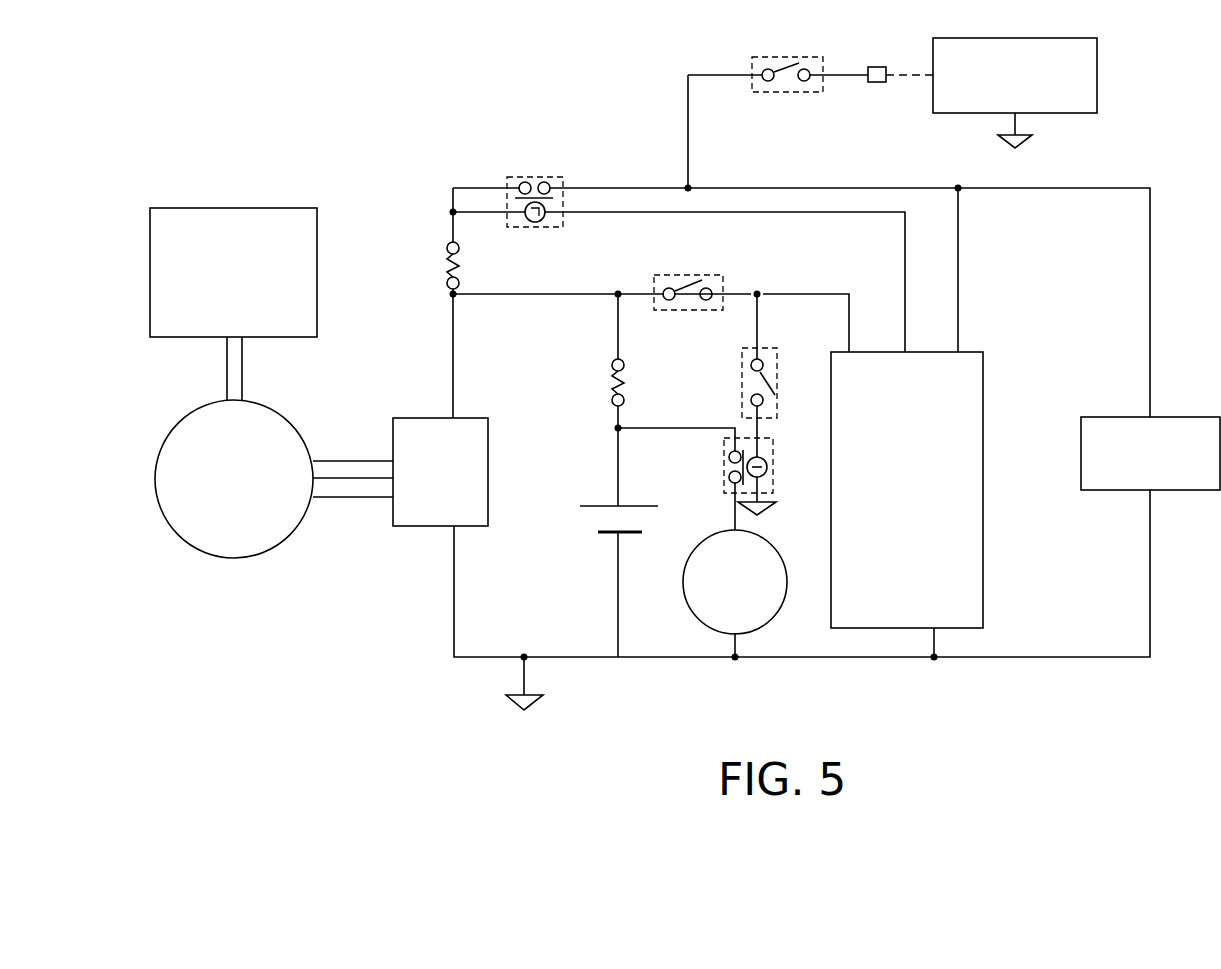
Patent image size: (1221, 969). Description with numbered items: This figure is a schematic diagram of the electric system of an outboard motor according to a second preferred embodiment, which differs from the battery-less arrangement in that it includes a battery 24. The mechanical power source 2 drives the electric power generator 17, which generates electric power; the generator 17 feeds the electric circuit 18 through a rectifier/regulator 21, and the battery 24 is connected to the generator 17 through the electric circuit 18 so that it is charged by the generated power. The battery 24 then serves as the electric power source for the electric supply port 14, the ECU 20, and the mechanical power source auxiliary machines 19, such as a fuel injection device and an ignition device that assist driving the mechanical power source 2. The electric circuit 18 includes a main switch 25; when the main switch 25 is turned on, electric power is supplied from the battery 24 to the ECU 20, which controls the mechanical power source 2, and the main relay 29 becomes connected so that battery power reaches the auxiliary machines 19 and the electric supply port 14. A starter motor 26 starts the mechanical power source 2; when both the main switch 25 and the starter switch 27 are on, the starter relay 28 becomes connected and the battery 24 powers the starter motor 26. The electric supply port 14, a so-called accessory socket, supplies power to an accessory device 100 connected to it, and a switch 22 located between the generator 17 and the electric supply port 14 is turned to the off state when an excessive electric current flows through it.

The mechanical power source 2 is at (230, 208).
The electric power generator 17 is at (236, 558).
The rectifier/regulator 21 is at (405, 414).
The electric circuit 18 is at (463, 173).
The main relay 29 is at (543, 177).
The main switch 25 is at (687, 275).
The battery 24 is at (588, 502).
The starter switch 27 is at (742, 380).
The starter relay 28 is at (724, 468).
The starter motor 26 is at (701, 623).
The ECU 20 is at (872, 350).
The mechanical power source auxiliary machines 19 is at (1185, 417).
The switch 22 is at (788, 92).
The electric supply port 14 is at (878, 82).
The accessory device 100 is at (1097, 75).